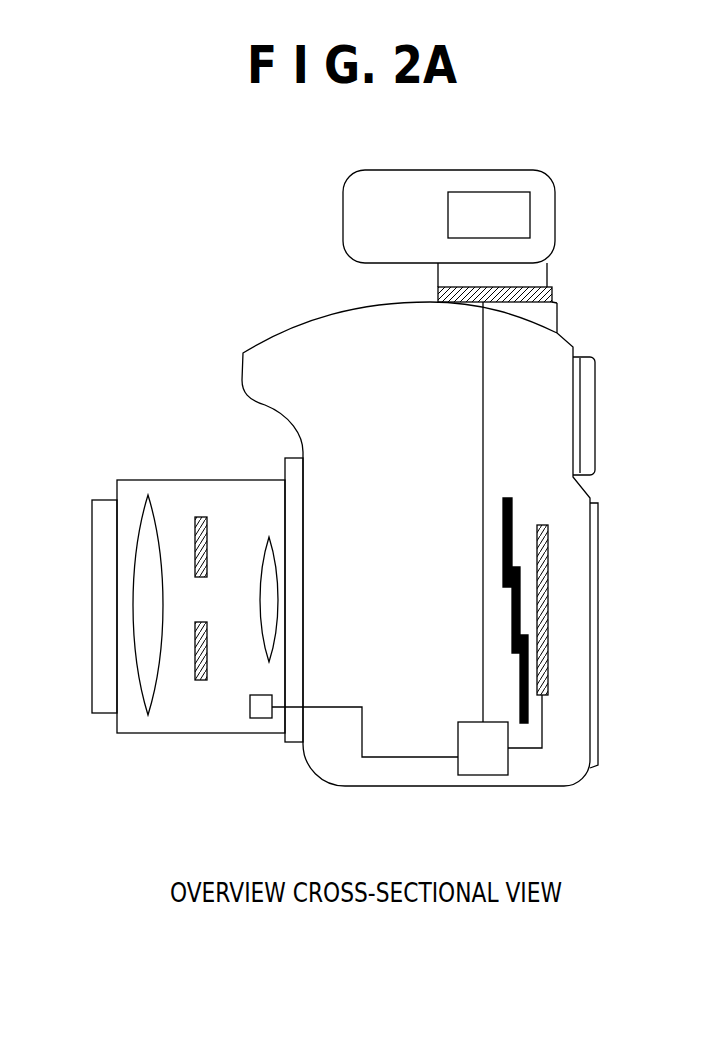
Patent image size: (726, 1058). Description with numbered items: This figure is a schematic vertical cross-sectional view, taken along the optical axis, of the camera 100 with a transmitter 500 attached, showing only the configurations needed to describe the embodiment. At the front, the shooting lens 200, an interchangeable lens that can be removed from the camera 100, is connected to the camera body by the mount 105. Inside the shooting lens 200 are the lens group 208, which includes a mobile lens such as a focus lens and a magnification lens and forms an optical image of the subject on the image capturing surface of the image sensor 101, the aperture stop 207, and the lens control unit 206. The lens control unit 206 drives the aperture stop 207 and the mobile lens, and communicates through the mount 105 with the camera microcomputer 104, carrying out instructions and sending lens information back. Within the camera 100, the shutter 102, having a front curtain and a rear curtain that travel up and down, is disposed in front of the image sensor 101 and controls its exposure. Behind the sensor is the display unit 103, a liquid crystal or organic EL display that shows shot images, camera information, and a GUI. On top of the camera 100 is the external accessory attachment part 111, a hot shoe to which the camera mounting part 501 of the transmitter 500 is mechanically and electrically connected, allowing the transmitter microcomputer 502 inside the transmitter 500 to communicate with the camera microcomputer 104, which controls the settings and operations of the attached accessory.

The camera 100 is at (240, 350).
The image sensor 101 is at (548, 608).
The shutter 102 is at (512, 547).
The display unit 103 is at (600, 517).
The camera microcomputer 104 is at (483, 775).
The mount 105 is at (297, 743).
The external accessory attachment part 111 is at (557, 310).
The shooting lens 200 is at (92, 498).
The lens control unit 206 is at (260, 718).
The aperture stop 207 is at (202, 578).
The lens group 208 is at (265, 543).
The transmitter 500 is at (513, 168).
The camera mounting part 501 is at (527, 285).
The transmitter microcomputer 502 is at (530, 212).